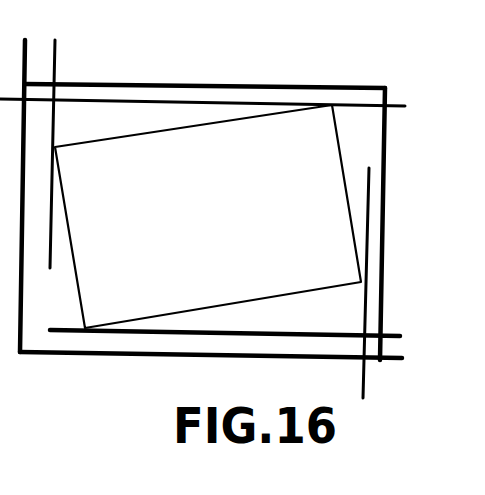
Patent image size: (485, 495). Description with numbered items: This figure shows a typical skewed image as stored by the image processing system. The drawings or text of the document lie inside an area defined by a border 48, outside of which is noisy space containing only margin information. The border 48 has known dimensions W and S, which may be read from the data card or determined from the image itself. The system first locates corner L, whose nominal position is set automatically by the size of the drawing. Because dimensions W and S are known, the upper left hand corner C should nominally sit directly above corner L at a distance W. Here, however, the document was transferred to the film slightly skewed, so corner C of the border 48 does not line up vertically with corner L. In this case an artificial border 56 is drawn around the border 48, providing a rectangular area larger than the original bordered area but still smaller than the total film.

The artificial border 56 is at (183, 105).
The border 48 is at (188, 135).
The upper left hand corner C is at (55, 147).
The dimension W is at (305, 278).
The corner L is at (85, 328).
The dimension S is at (358, 266).